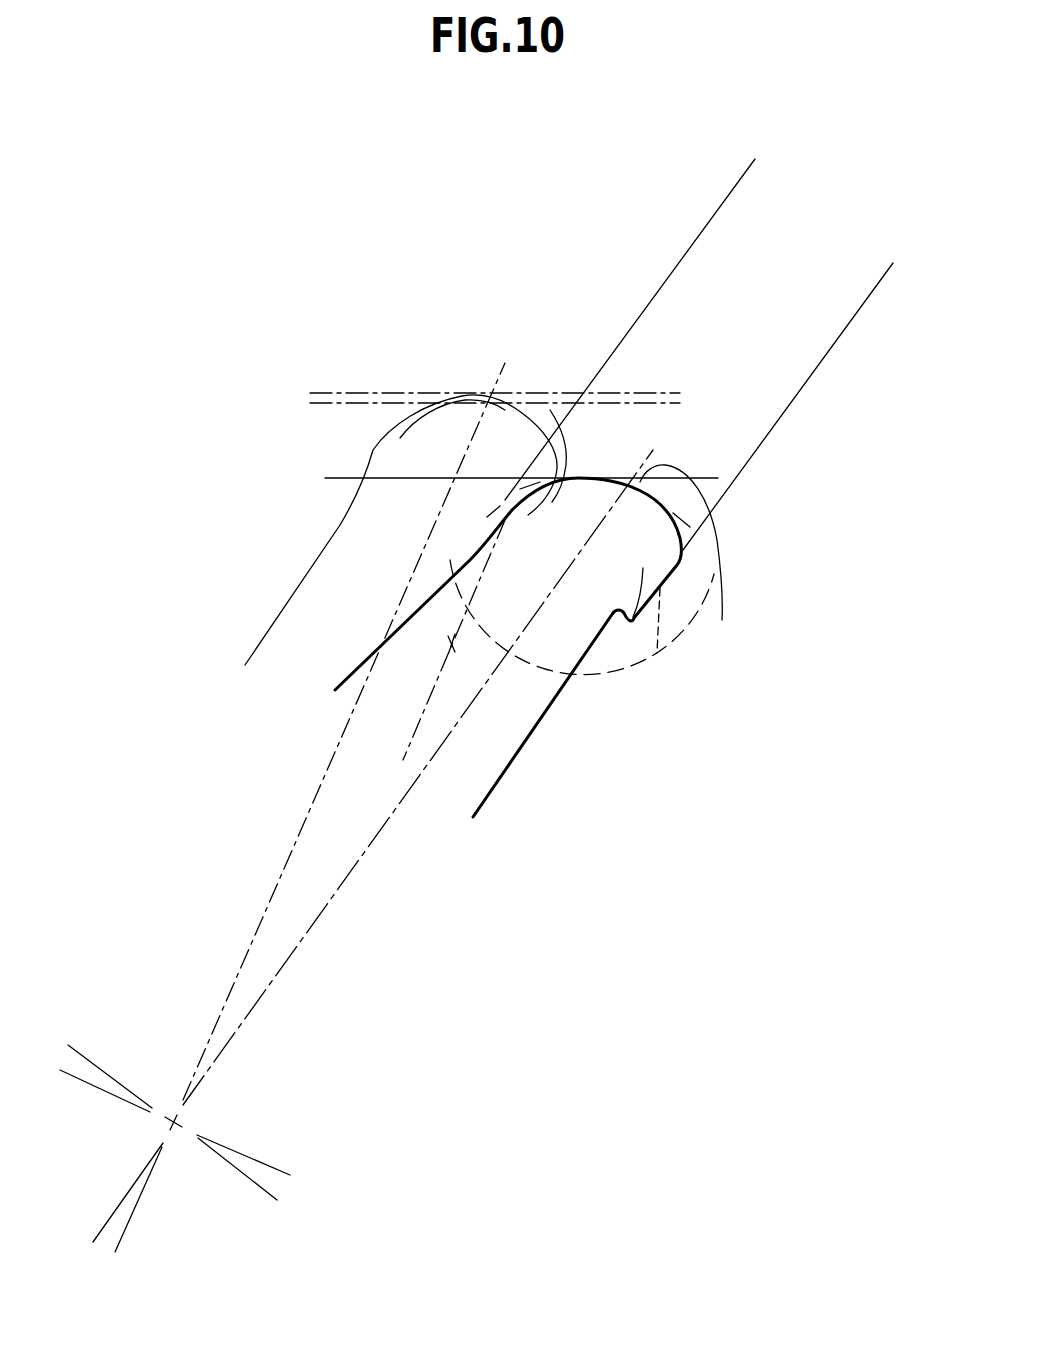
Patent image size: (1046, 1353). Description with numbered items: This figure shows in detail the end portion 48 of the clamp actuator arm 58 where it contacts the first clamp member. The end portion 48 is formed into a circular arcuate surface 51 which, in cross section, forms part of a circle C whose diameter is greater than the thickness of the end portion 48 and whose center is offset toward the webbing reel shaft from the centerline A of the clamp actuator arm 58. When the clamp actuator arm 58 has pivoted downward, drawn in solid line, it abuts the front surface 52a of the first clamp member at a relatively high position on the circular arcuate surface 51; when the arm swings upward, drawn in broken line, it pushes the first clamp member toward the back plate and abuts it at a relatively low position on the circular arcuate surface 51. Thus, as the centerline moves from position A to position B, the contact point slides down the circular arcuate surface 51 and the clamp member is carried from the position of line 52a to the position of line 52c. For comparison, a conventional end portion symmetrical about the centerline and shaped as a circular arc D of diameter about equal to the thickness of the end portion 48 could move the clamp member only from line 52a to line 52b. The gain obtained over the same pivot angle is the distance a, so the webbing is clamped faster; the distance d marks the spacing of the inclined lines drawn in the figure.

The end portion 48 is at (572, 503).
The circular arcuate surface 51 is at (706, 485).
The front surface 52a is at (706, 481).
The front surface 52b is at (628, 403).
The line 52c is at (663, 393).
The clamp actuator arm 58 is at (470, 770).
The distance a is at (323, 325).
The distance d is at (887, 270).
The centerline A is at (292, 955).
The position B is at (262, 931).
The circle C is at (647, 742).
The circular arc D is at (657, 653).